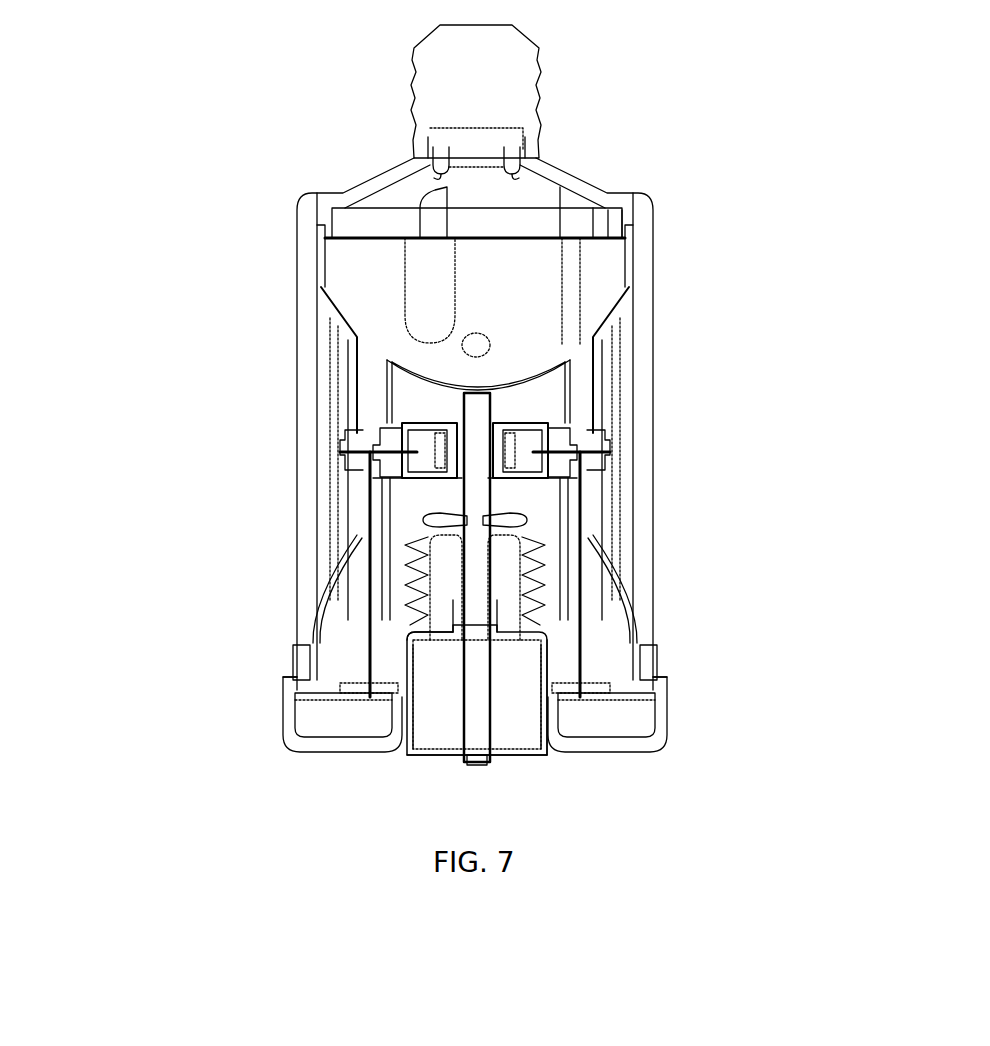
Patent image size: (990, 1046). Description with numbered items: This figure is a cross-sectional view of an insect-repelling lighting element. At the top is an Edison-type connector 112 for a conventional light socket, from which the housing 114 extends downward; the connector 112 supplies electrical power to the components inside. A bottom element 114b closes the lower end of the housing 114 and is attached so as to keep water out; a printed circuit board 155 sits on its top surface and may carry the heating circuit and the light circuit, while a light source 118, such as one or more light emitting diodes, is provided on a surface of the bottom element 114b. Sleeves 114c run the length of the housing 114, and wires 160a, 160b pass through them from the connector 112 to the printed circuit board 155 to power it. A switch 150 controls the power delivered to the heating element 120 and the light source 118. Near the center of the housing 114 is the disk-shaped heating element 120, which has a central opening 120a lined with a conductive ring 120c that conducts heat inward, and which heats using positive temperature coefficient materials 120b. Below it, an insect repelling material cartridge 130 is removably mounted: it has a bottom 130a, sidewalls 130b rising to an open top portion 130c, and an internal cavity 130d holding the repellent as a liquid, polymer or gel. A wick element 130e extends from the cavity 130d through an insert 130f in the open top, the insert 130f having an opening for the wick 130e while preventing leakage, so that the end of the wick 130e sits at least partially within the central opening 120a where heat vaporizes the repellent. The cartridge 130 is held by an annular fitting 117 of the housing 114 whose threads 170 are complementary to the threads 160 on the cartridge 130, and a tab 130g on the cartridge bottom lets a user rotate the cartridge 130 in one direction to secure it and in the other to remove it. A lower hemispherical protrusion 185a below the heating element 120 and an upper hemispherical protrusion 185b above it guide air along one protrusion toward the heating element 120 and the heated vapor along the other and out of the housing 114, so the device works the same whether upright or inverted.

The connector 112 is at (537, 108).
The housing 114 is at (654, 237).
The bottom element 114b is at (667, 700).
The sleeves 114c is at (352, 490).
The fitting 117 is at (543, 625).
The light source 118 is at (645, 737).
The heating element 120 is at (605, 458).
The central opening 120a is at (501, 437).
The positive temperature coefficient materials 120b is at (528, 455).
The conductive ring 120c is at (530, 447).
The insect repelling material cartridge 130 is at (539, 662).
The bottom 130a is at (540, 760).
The sidewalls 130b is at (575, 702).
The top portion 130c is at (545, 612).
The internal cavity 130d is at (435, 718).
The wick element 130e is at (473, 522).
The insert 130f is at (462, 615).
The tab 130g is at (477, 770).
The switch 150 is at (333, 690).
The printed circuit board 155 is at (537, 705).
The threads 160 is at (413, 597).
The wire 160a is at (600, 482).
The wire 160b is at (600, 510).
The threads 170 is at (492, 605).
The lower hemispherical protrusion 185a is at (345, 337).
The upper hemispherical protrusion 185b is at (340, 565).